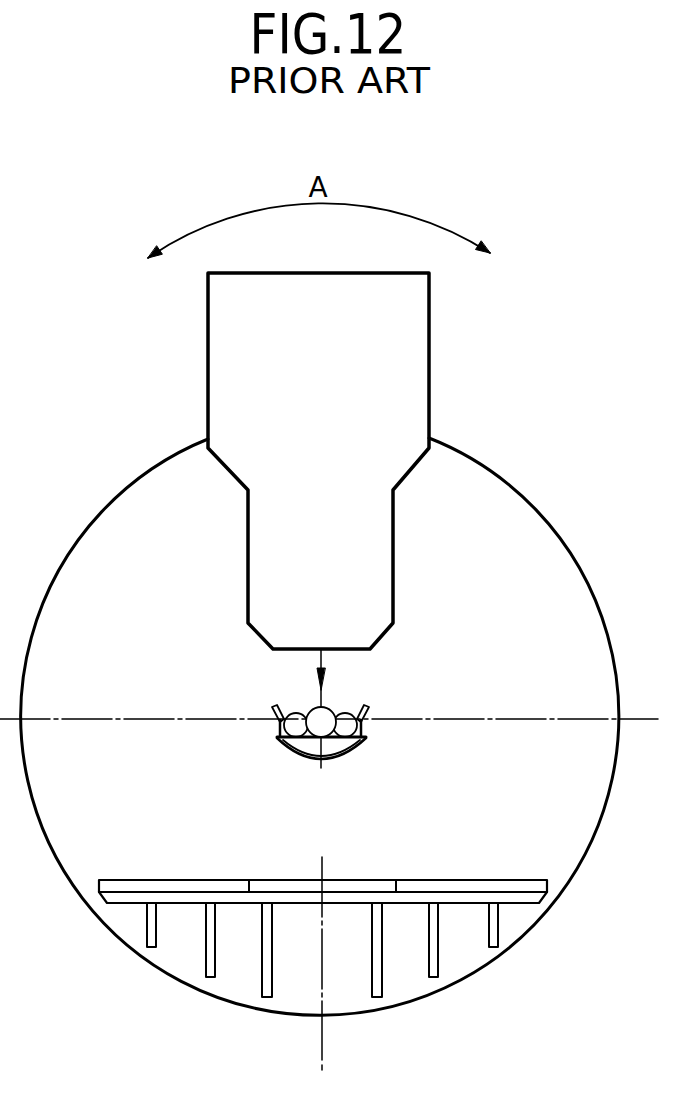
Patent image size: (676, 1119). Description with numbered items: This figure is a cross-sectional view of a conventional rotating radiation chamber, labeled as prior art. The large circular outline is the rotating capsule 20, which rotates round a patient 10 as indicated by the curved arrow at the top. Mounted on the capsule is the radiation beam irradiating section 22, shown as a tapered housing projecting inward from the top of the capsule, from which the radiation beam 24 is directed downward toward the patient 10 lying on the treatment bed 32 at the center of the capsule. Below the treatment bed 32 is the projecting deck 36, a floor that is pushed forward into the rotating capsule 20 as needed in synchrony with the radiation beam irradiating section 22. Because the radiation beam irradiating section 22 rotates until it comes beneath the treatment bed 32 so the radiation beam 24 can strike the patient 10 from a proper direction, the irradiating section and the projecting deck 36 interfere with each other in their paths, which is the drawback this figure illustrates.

The patient 10 is at (343, 711).
The rotating capsule 20 is at (532, 500).
The radiation beam irradiating section 22 is at (393, 557).
The radiation beam 24 is at (319, 660).
The treatment bed 32 is at (368, 728).
The projecting deck 36 is at (465, 880).